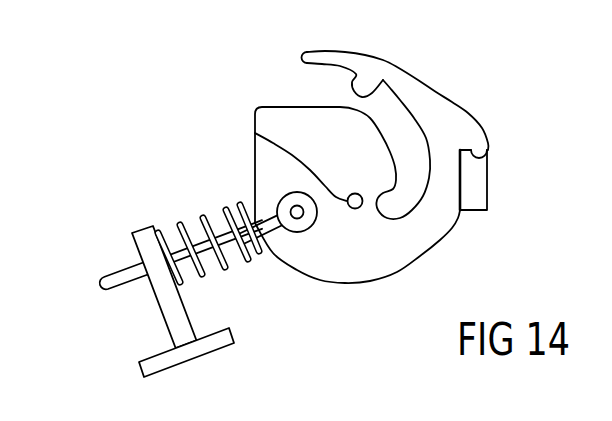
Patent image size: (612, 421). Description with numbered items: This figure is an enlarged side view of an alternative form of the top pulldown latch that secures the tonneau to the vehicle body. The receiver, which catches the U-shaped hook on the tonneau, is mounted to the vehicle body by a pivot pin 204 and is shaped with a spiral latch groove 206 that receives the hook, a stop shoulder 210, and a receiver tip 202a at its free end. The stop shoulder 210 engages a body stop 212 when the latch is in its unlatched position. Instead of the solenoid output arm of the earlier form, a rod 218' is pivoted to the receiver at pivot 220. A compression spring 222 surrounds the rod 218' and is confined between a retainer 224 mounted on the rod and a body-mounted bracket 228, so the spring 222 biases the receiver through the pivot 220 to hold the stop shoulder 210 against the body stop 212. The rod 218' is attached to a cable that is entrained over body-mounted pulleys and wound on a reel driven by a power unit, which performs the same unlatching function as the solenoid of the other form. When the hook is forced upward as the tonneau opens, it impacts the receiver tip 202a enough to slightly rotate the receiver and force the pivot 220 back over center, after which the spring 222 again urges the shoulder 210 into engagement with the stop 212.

The receiver tip 202a is at (307, 57).
The pivot pin 204 is at (254, 133).
The spiral latch groove 206 is at (383, 80).
The stop shoulder 210 is at (480, 157).
The body stop 212 is at (478, 185).
The rod 218' is at (85, 271).
The pivot 220 is at (306, 230).
The compression spring 222 is at (233, 266).
The retainer 224 is at (238, 205).
The body-mounted bracket 228 is at (167, 308).